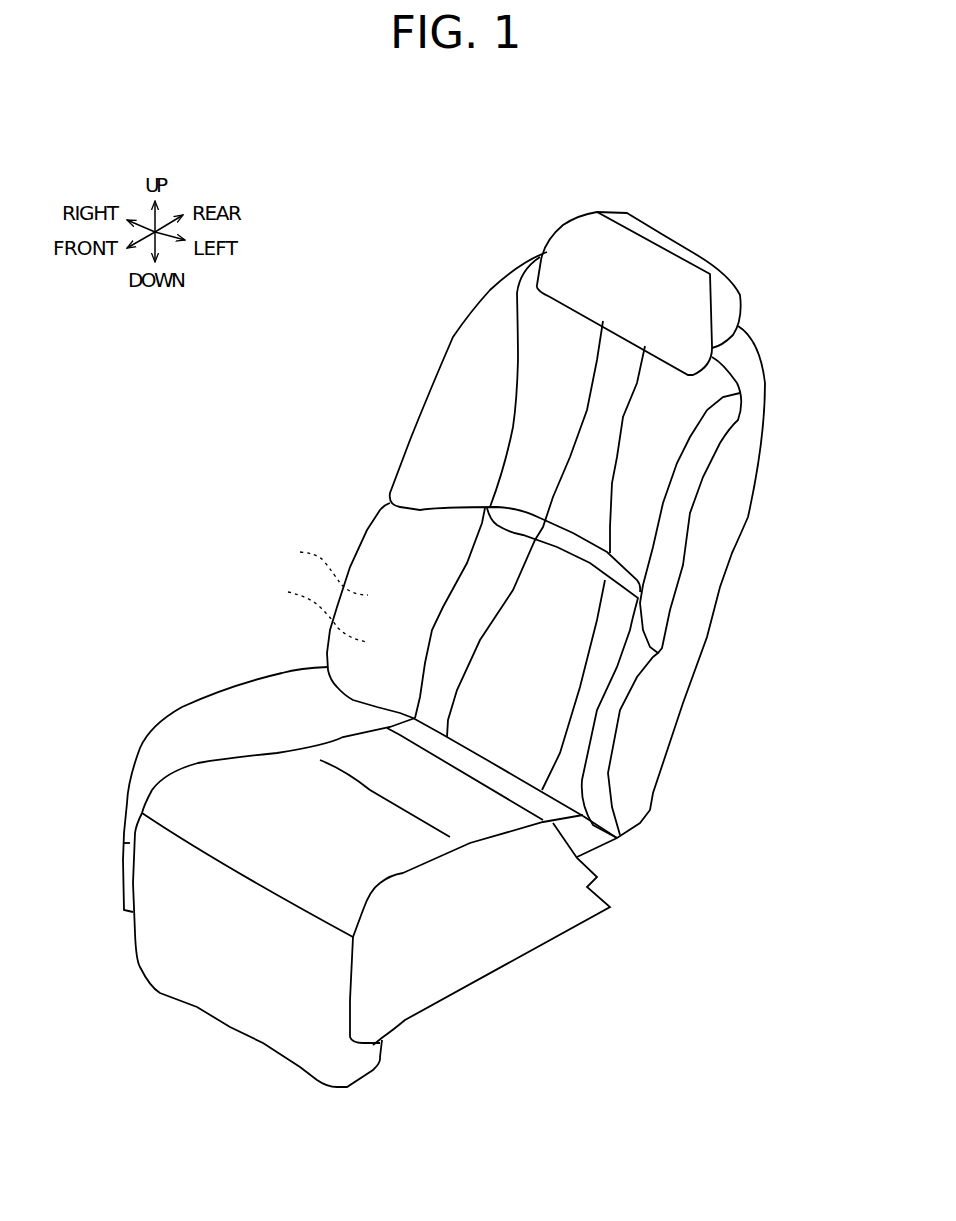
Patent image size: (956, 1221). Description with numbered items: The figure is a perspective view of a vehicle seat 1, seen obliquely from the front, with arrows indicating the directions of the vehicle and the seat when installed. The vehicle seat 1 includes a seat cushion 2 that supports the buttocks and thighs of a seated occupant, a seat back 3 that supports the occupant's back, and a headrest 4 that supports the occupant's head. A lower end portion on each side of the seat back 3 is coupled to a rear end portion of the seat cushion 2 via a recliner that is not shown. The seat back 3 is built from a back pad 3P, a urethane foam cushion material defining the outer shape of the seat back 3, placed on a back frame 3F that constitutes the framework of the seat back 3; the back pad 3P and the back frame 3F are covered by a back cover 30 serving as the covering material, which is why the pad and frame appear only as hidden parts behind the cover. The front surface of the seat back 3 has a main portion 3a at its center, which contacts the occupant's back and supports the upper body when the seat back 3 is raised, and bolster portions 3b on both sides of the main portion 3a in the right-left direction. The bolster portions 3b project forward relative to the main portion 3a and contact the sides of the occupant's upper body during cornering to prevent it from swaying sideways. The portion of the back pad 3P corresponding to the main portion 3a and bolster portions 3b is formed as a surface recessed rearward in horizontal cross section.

The vehicle seat 1 is at (322, 330).
The seat cushion 2 is at (217, 690).
The seat back 3 is at (413, 420).
The main portion 3a is at (605, 418).
The bolster portions 3b is at (470, 373).
The headrest 4 is at (588, 232).
The back cover 30 is at (387, 548).
The back pad 3P is at (321, 565).
The back frame 3F is at (315, 608).